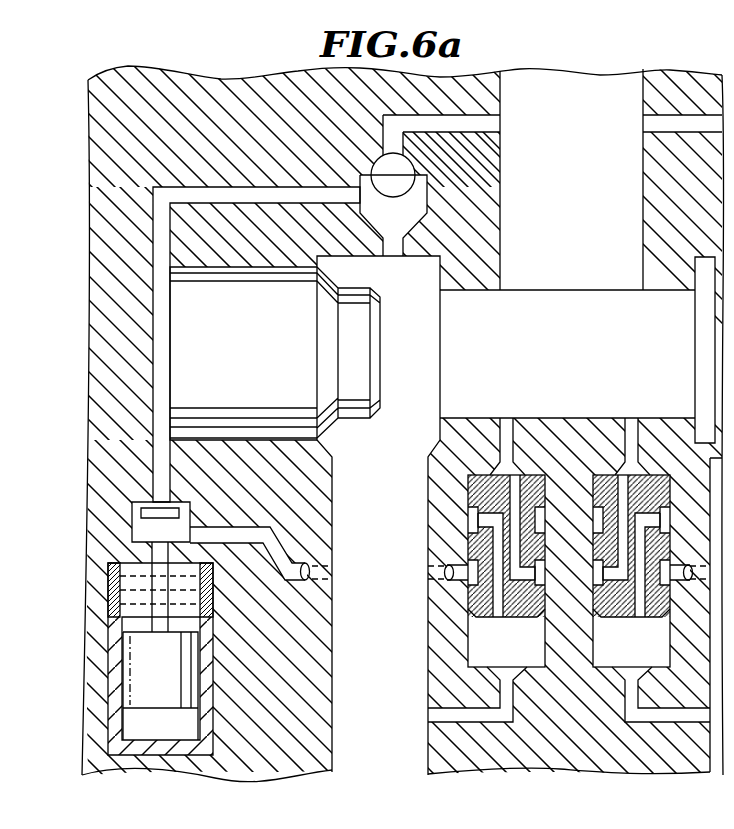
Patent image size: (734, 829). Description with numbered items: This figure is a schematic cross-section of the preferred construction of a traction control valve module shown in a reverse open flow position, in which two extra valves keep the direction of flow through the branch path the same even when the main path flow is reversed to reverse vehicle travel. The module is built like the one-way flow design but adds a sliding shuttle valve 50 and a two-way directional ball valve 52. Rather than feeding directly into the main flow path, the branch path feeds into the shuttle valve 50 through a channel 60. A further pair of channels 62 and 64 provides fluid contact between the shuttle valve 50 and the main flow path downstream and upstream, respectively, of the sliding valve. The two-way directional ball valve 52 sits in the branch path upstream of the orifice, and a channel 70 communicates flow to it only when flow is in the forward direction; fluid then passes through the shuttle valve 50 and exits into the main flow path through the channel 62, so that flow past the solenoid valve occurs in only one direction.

The sliding shuttle valve 50 is at (470, 498).
The two-way directional ball valve 52 is at (393, 182).
The channel 60 is at (322, 572).
The channel 62 is at (462, 720).
The channel 64 is at (507, 420).
The channel 70 is at (447, 114).